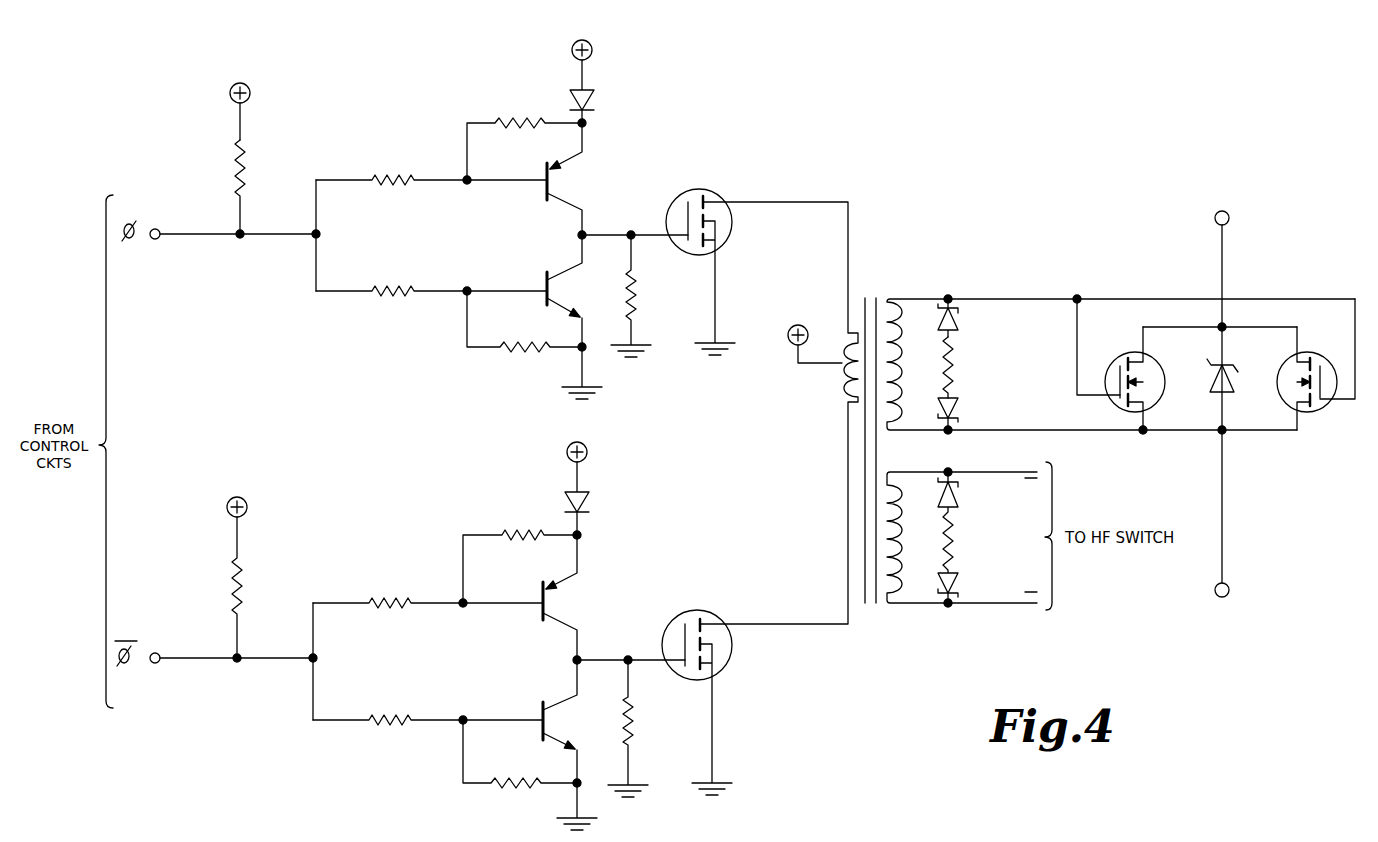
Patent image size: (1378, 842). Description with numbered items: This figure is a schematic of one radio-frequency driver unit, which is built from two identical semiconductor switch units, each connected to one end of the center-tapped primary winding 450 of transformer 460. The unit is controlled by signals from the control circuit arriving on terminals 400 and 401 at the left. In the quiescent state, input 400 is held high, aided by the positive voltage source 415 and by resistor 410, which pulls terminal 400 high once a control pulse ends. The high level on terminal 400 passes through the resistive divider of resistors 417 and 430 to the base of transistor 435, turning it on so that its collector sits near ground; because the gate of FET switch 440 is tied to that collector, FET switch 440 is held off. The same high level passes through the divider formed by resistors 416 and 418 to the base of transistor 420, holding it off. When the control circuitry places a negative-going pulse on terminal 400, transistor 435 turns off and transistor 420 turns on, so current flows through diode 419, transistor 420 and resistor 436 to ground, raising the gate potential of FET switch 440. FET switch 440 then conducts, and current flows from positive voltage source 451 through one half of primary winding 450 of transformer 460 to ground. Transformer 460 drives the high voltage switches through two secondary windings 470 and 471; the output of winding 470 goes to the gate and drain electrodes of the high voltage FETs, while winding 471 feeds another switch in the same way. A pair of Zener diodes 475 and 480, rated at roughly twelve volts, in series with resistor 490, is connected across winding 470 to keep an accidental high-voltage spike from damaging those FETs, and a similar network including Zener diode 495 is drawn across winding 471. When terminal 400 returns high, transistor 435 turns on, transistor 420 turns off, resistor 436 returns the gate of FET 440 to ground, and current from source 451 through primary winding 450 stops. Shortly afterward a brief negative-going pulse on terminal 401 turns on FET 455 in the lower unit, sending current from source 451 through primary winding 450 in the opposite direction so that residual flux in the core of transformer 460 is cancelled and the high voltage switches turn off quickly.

The terminal 400 is at (159, 231).
The terminal 401 is at (159, 656).
The resistor 410 is at (246, 174).
The positive voltage source 415 is at (249, 93).
The resistor 416 is at (391, 178).
The resistor 417 is at (392, 288).
The resistor 418 is at (510, 121).
The diode 419 is at (596, 99).
The transistor 420 is at (563, 187).
The resistor 430 is at (525, 356).
The transistor 435 is at (556, 301).
The resistor 436 is at (637, 302).
The FET switch 440 is at (704, 190).
The primary winding 450 is at (846, 379).
The positive voltage source 451 is at (789, 331).
The FET 455 is at (663, 636).
The transformer 460 is at (890, 631).
The secondary winding 470 is at (889, 299).
The secondary winding 471 is at (894, 606).
The Zener diode 475 is at (959, 313).
The Zener diode 480 is at (959, 418).
The resistor 490 is at (955, 367).
The zener diode 495 is at (948, 605).